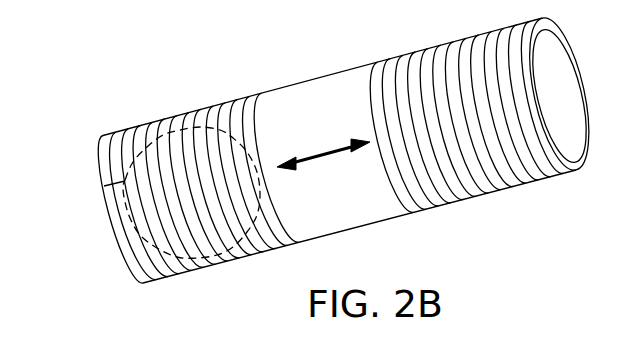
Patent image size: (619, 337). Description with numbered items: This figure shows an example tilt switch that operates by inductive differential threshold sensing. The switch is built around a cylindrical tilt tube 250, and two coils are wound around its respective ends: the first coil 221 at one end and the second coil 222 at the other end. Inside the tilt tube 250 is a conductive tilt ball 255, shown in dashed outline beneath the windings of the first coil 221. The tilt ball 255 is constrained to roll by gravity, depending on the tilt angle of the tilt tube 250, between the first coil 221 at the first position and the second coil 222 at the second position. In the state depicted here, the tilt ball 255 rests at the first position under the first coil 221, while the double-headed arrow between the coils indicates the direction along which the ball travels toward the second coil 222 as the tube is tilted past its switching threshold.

The tilt tube 250 is at (325, 77).
The Coil 1 221 is at (256, 122).
The Coil 2 222 is at (397, 168).
The conductive tilt ball 255 is at (102, 190).